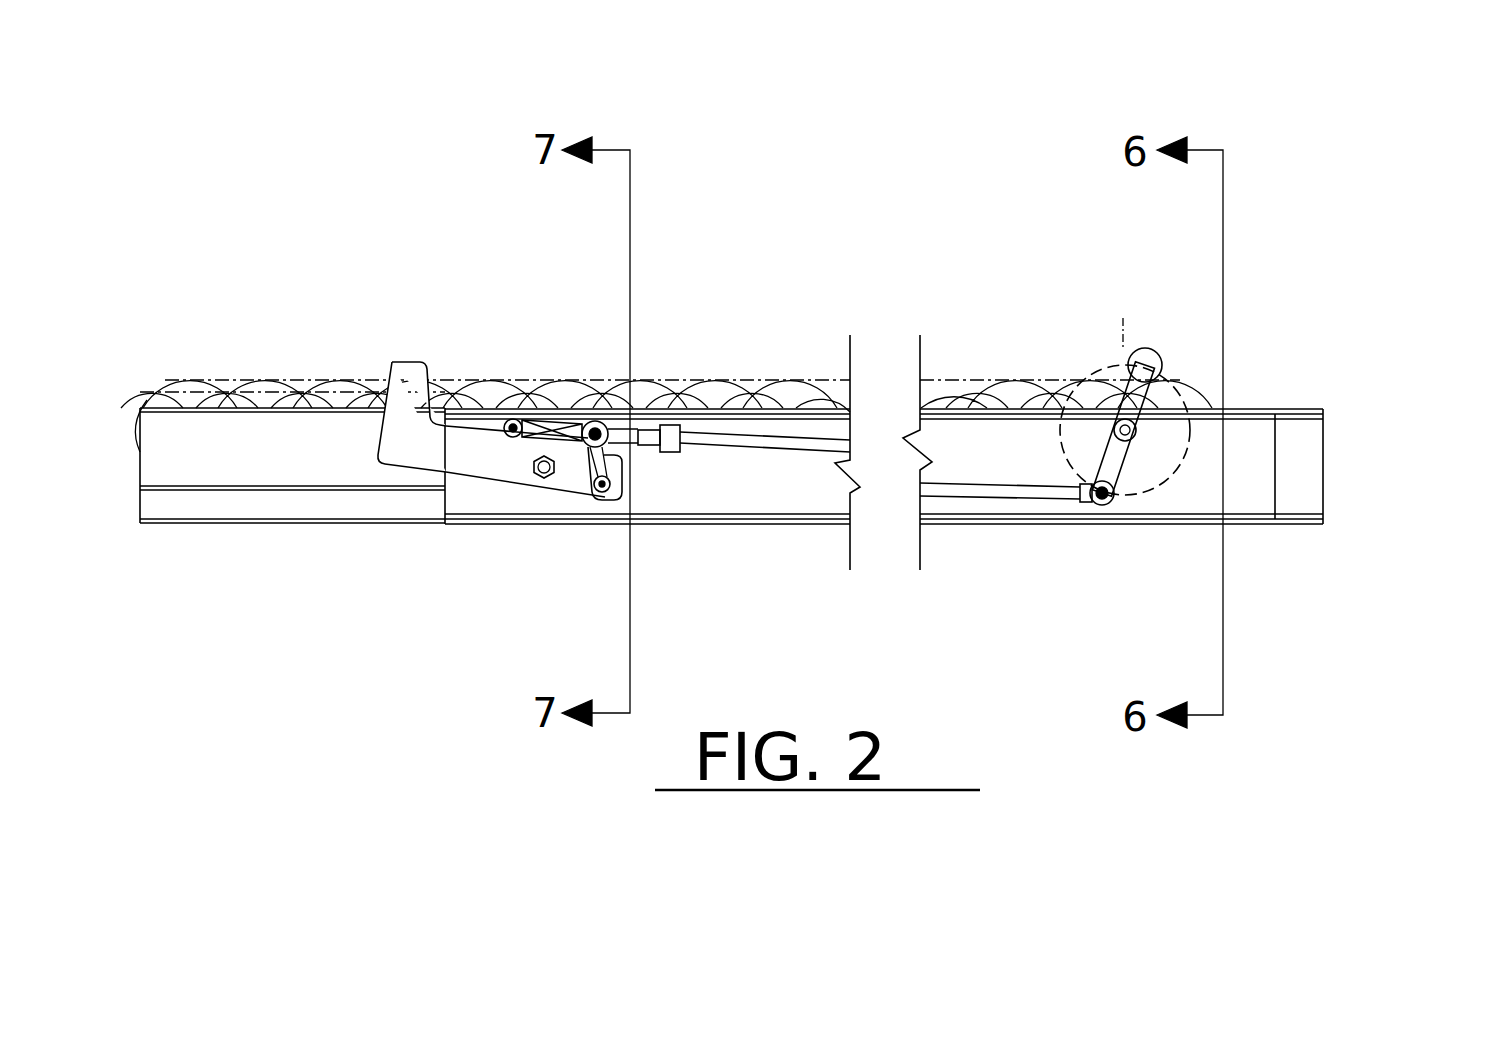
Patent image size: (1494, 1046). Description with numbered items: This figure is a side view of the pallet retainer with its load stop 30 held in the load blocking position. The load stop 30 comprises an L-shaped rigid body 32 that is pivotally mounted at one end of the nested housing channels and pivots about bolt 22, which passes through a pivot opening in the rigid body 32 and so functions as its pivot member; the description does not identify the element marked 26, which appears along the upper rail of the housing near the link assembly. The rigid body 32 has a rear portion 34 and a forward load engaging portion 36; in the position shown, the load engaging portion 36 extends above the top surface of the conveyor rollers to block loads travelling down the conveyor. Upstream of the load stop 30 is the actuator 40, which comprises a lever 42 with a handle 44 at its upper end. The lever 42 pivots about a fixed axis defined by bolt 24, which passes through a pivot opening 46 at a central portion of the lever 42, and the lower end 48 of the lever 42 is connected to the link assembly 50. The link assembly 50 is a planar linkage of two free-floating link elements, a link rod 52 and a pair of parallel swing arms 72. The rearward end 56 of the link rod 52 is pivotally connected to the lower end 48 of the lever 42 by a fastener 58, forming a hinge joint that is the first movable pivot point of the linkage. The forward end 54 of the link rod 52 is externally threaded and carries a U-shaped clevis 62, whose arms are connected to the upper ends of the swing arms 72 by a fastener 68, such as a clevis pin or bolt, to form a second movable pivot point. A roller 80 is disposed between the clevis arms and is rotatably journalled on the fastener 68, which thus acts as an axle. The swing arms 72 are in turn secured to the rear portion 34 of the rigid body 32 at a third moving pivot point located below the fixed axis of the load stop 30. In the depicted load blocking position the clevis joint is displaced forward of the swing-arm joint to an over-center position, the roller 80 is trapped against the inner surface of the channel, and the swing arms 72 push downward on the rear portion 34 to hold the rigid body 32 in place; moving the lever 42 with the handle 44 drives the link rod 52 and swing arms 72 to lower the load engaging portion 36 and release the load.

The bolt 22 is at (541, 480).
The bolt 24 is at (1110, 412).
The frame rail 26 is at (500, 413).
The load stop 30 is at (377, 633).
The rigid body 32 is at (472, 477).
The rear portion 34 is at (571, 484).
The load engaging portion 36 is at (397, 356).
The actuator 40 is at (1298, 333).
The lever 42 is at (1121, 379).
The handle 44 is at (1138, 343).
The pivot opening 46 is at (1143, 444).
The lower end of lever / hinge joint 48 is at (1122, 512).
The link assembly 50 is at (807, 477).
The link rod 52 is at (790, 435).
The forward end of link rod 54 is at (655, 423).
The rearward end of link rod 56 is at (1085, 508).
The fastener 58 is at (1103, 511).
The clevis 62 is at (633, 425).
The fastener 68 is at (521, 420).
The swing arm 72 is at (616, 481).
The roller 80 is at (584, 405).